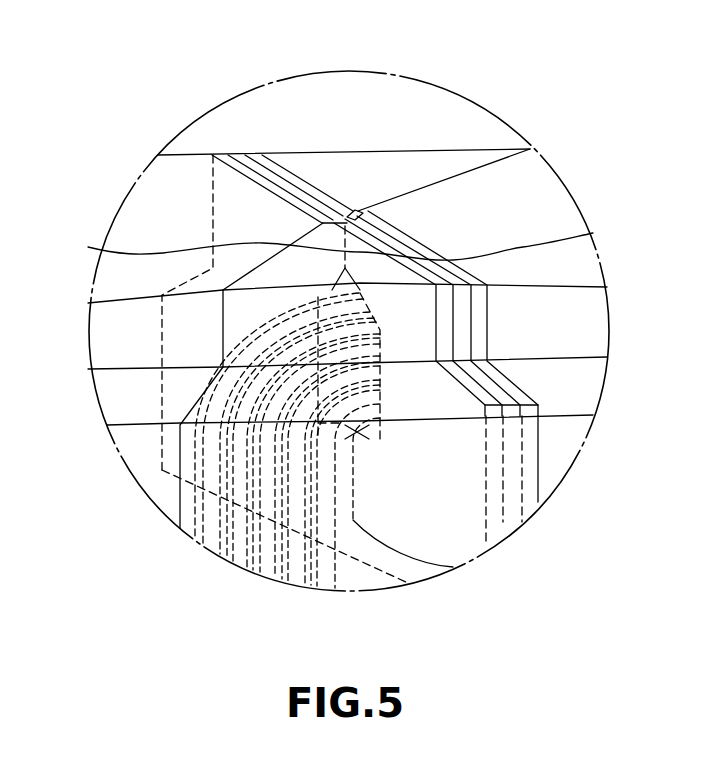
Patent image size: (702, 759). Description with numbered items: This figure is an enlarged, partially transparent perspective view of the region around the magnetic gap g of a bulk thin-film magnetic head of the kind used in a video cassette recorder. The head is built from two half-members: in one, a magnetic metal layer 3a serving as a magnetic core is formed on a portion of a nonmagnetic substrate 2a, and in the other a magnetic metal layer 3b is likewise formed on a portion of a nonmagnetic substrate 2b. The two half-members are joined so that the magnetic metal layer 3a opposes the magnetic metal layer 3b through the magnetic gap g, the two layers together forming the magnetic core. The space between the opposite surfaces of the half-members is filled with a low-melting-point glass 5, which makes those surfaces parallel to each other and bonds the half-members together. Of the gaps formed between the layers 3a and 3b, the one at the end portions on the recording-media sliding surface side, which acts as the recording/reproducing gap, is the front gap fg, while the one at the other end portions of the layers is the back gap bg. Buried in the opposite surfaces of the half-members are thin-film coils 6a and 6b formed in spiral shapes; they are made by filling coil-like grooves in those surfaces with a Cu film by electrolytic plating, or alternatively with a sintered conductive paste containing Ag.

The nonmagnetic substrate 2a is at (150, 205).
The nonmagnetic substrate 2b is at (547, 203).
The magnetic metal layer 3a is at (268, 172).
The magnetic metal layer 3b is at (483, 378).
The low-melting-point glass 5 is at (378, 268).
The magnetic gap g is at (365, 207).
The front gap fg is at (88, 247).
The back gap bg is at (455, 568).
The thin-film coil 6a is at (190, 493).
The thin-film coil 6b is at (210, 520).